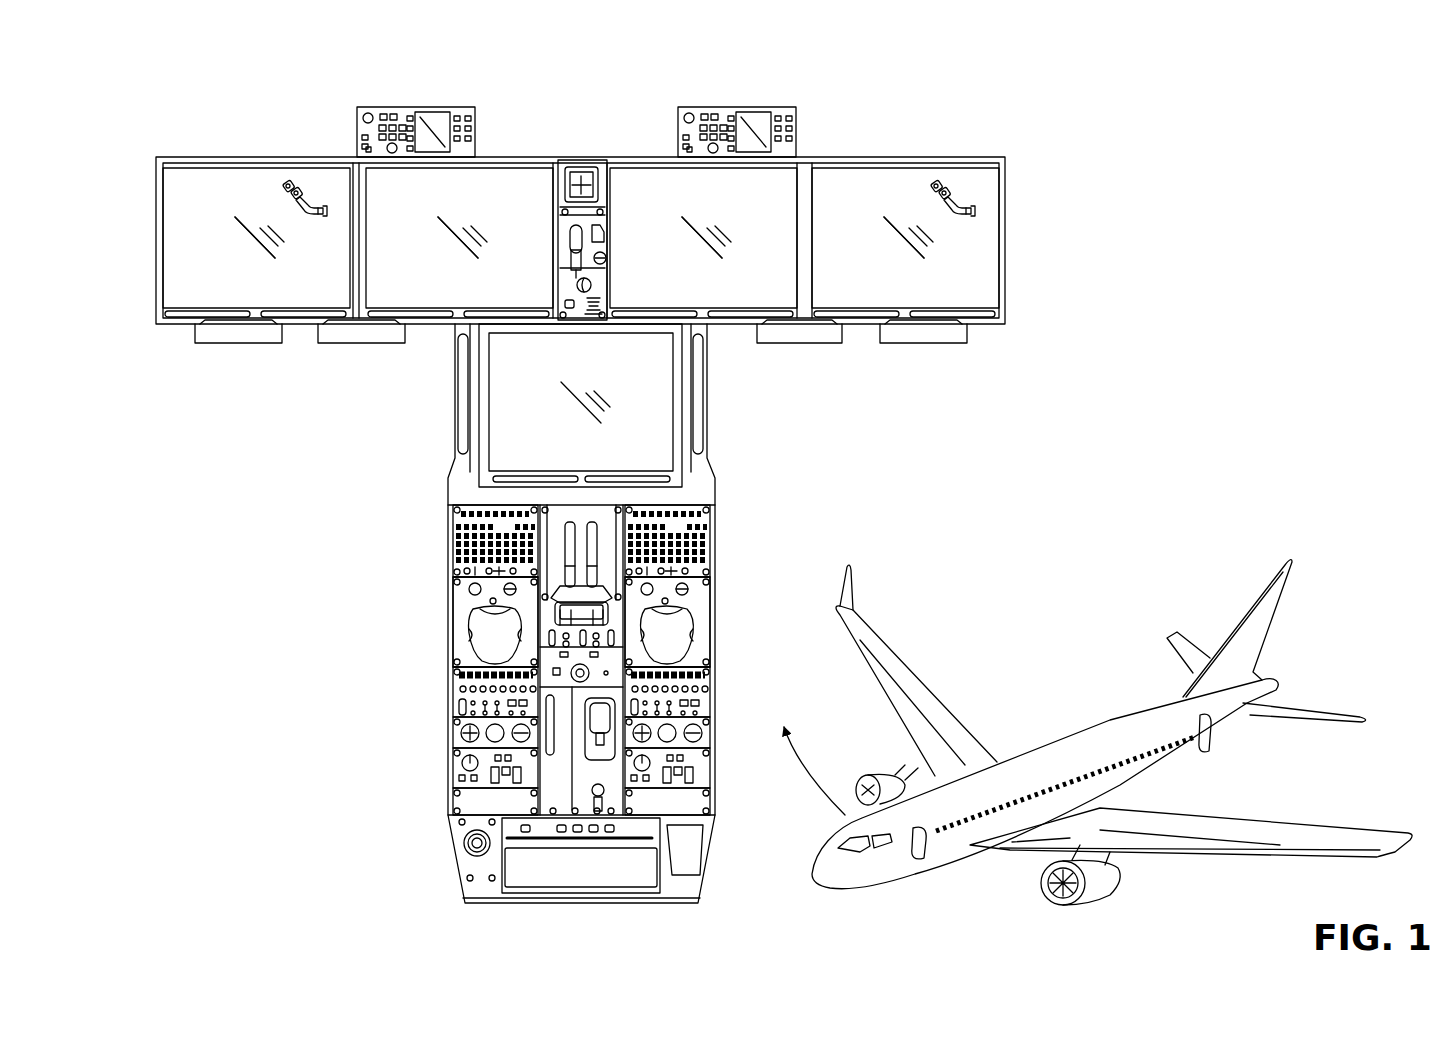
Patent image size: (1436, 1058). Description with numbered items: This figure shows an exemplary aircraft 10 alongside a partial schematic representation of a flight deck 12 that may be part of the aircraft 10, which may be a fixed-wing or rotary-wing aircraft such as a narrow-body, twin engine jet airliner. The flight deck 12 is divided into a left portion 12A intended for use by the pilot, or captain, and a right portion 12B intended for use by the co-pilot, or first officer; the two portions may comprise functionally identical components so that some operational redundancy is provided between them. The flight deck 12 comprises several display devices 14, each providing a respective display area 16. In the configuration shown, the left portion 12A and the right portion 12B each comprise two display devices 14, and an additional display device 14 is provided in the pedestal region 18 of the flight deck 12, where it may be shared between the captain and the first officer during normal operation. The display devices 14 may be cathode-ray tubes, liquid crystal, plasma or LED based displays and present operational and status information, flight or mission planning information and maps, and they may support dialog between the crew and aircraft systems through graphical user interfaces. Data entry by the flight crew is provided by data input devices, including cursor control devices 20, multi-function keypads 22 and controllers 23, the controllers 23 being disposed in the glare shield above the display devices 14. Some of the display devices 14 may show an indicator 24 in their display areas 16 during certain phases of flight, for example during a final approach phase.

The aircraft 10 is at (1085, 745).
The flight deck 12 is at (1019, 136).
The left portion 12A is at (318, 438).
The right portion 12B is at (918, 438).
The display device 14 is at (184, 196).
The display area 16 is at (332, 286).
The pedestal region 18 is at (428, 727).
The cursor control device 20 is at (455, 618).
The multi-function keypad 22 is at (455, 540).
The controller 23 is at (420, 107).
The indicator 24 is at (302, 186).